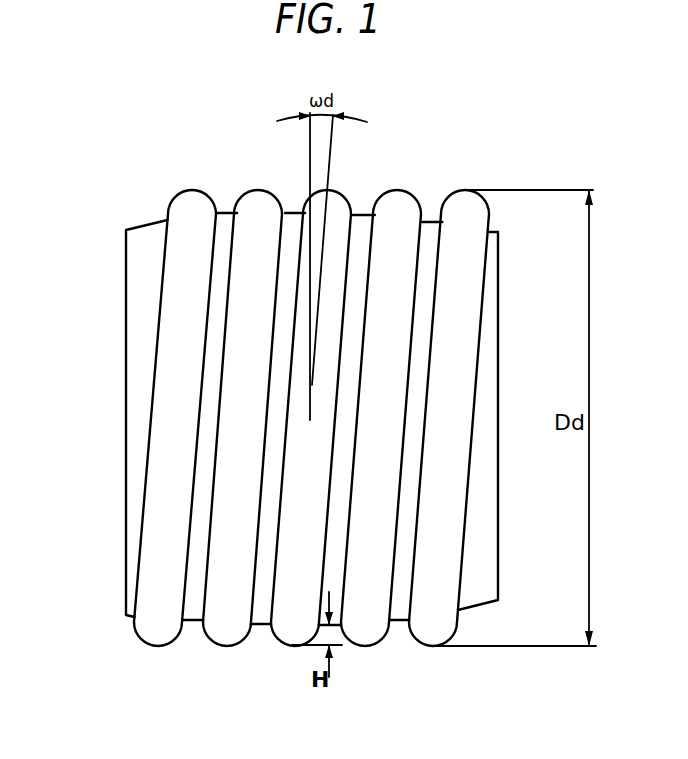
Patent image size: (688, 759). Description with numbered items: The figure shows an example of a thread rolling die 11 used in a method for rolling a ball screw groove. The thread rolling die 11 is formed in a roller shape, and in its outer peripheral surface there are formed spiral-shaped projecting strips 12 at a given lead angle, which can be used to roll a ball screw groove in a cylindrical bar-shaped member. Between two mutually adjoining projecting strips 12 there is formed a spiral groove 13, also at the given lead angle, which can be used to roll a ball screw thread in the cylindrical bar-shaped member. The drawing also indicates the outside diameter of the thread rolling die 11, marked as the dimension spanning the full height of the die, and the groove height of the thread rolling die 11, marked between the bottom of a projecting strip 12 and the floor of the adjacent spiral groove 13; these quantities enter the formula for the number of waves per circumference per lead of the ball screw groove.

The thread rolling die 11 is at (114, 378).
The projecting strips 12 is at (259, 199).
The spiral groove 13 is at (432, 220).